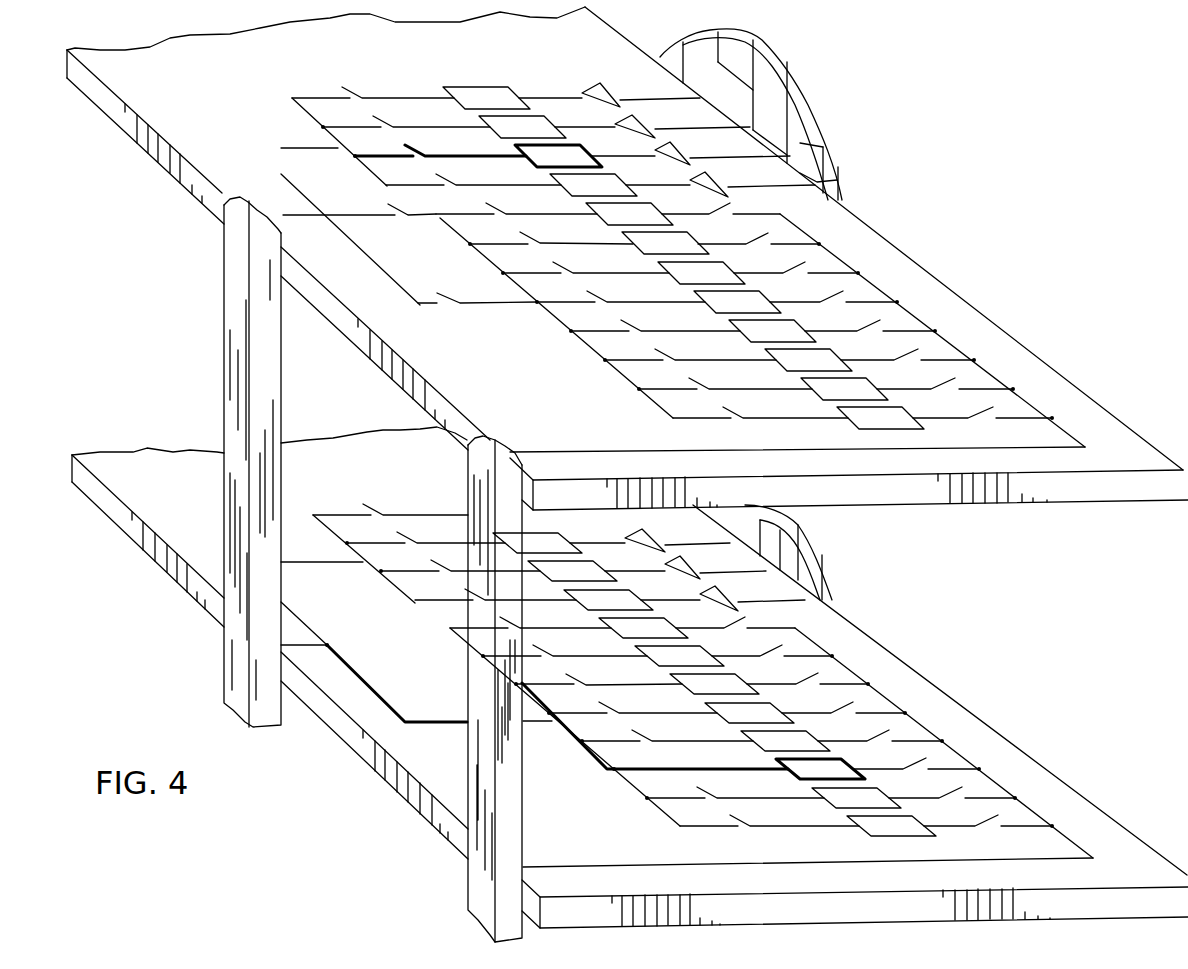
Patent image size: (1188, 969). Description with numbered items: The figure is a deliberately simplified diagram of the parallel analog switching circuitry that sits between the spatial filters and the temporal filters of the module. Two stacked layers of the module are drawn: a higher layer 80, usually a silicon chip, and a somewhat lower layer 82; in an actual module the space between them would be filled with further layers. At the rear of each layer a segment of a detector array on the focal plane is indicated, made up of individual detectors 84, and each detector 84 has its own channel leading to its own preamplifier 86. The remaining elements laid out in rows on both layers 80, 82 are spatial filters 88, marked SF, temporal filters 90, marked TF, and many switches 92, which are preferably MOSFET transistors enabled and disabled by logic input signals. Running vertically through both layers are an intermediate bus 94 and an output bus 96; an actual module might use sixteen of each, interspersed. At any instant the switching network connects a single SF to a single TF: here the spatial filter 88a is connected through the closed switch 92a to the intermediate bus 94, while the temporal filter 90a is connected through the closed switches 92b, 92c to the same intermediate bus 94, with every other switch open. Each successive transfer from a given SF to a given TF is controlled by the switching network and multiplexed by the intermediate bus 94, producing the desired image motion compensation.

The higher layer 80 is at (955, 255).
The lower layer 82 is at (968, 676).
The detector 84 is at (800, 68).
The preamplifier 86 is at (640, 128).
The spatial filter 88 is at (548, 133).
The spatial filter 88a is at (523, 153).
The temporal filter 90 is at (700, 274).
The temporal filter 90a is at (833, 775).
The switch 92 is at (772, 215).
The closed switch 92a is at (438, 160).
The closed switch 92b is at (716, 773).
The closed switch 92c is at (452, 720).
The intermediate bus 94 is at (233, 333).
The output bus 96 is at (480, 680).